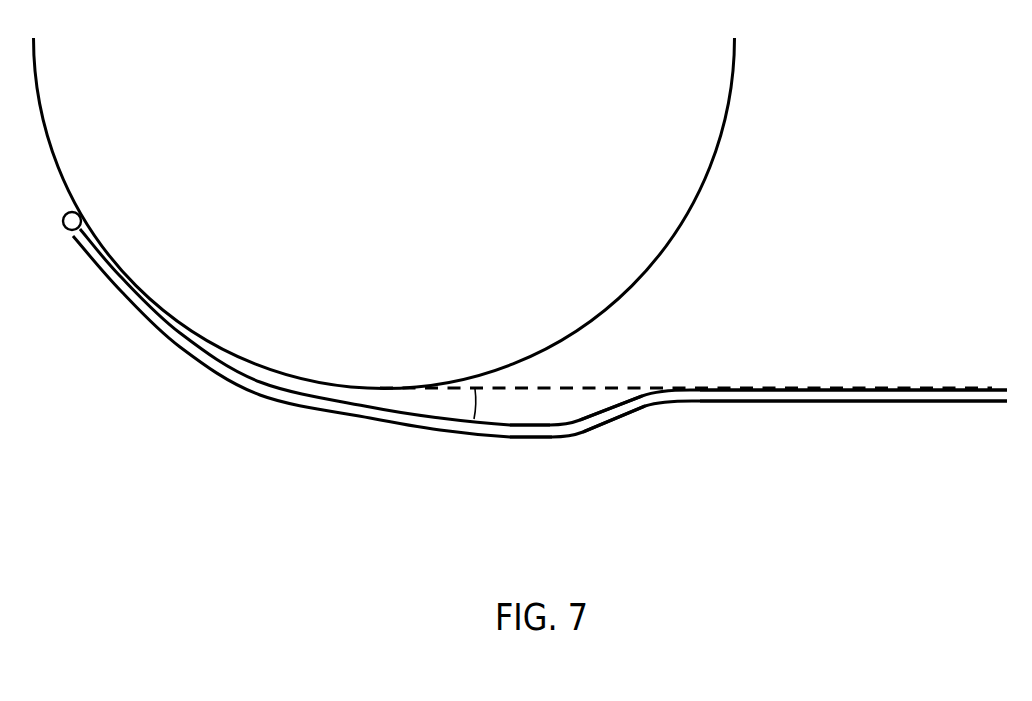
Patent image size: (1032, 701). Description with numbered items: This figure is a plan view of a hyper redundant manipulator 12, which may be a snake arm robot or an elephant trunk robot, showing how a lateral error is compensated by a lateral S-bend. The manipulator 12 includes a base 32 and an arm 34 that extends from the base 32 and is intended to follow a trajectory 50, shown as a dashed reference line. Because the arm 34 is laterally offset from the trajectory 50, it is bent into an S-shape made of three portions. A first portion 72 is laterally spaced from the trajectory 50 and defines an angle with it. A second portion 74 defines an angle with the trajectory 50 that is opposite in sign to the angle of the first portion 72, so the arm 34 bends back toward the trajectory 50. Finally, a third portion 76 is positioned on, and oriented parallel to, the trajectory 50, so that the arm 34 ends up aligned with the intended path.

The hyper redundant manipulator 12 is at (780, 109).
The base 32 is at (380, 98).
The arm 34 is at (442, 497).
The trajectory 50 is at (630, 388).
The first portion 72 is at (507, 448).
The second portion 74 is at (633, 430).
The third portion 76 is at (808, 423).